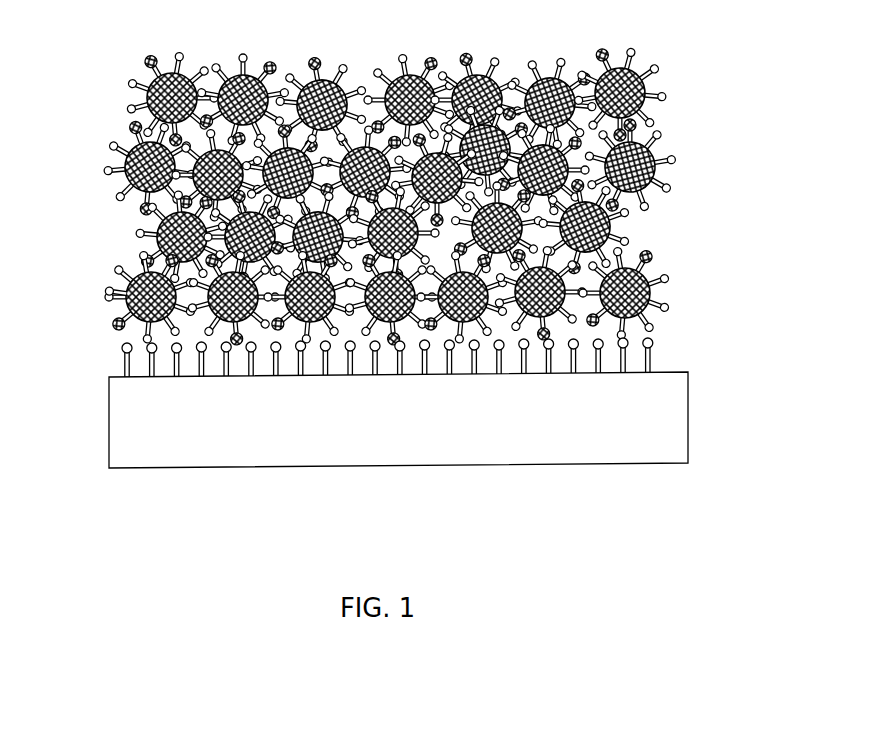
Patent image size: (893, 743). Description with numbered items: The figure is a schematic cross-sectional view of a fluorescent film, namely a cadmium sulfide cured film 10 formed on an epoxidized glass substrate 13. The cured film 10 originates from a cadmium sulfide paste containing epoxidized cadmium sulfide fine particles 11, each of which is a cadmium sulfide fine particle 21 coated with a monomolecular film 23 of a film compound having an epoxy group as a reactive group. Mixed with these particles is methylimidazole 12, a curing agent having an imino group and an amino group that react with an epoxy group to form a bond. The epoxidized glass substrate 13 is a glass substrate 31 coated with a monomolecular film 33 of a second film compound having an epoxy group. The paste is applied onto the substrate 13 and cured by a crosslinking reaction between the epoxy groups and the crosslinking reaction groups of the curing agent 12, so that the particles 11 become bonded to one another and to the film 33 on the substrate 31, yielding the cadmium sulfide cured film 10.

The cadmium sulfide cured film 10 is at (385, 180).
The epoxidized cadmium sulfide fine particles 11 is at (625, 68).
The 2-methylimidazole 12 is at (647, 254).
The epoxidized glass substrate 13 is at (449, 444).
The cadmium sulfide fine particles 21 is at (113, 308).
The monomolecular film 23 is at (115, 291).
The glass substrate 31 is at (360, 450).
The monomolecular film 33 is at (408, 368).